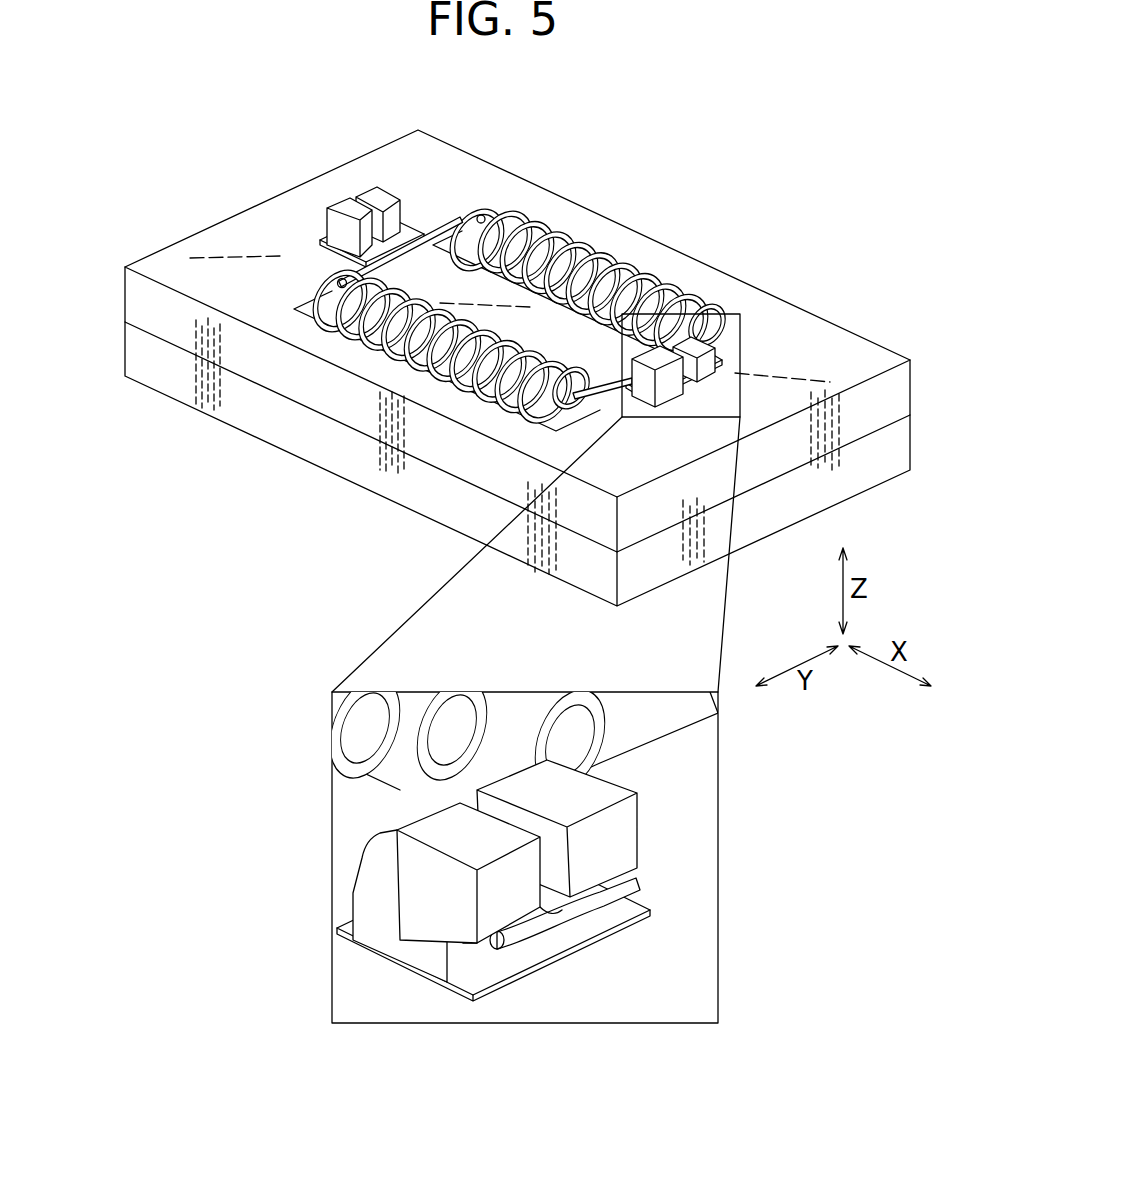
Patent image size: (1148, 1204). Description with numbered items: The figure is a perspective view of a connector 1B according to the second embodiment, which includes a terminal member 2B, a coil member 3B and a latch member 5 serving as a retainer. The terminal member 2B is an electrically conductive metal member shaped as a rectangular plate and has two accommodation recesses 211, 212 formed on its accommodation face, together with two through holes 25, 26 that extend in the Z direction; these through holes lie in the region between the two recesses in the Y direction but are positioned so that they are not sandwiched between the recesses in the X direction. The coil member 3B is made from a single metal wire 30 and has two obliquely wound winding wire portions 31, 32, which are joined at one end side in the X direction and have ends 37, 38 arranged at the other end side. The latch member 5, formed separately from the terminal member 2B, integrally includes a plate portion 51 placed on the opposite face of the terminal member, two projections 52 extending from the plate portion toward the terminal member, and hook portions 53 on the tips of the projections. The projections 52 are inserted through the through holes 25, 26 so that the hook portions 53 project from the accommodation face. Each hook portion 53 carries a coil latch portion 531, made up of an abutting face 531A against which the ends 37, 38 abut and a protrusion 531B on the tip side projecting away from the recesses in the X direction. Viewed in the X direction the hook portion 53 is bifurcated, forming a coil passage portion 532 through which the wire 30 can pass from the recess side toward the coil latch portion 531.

The connector 1B is at (803, 181).
The terminal member 2B is at (418, 148).
The latch member 5 is at (300, 432).
The plate portion 51 is at (165, 368).
The accommodation recess 211 is at (293, 294).
The accommodation recess 212 is at (530, 237).
The through hole 25 is at (320, 234).
The through hole 26 is at (712, 382).
The coil member 3B is at (607, 245).
The wire 30 is at (497, 210).
The winding wire portion 31 is at (423, 371).
The winding wire portion 32 is at (585, 247).
The projection 52 is at (345, 208).
The hook portion 53 is at (383, 194).
The coil latch portion 531 is at (450, 960).
The abutting face 531A is at (457, 943).
The protrusion 531B is at (550, 920).
The coil passage portion 532 is at (566, 855).
The end 37 is at (520, 930).
The end 38 is at (575, 914).